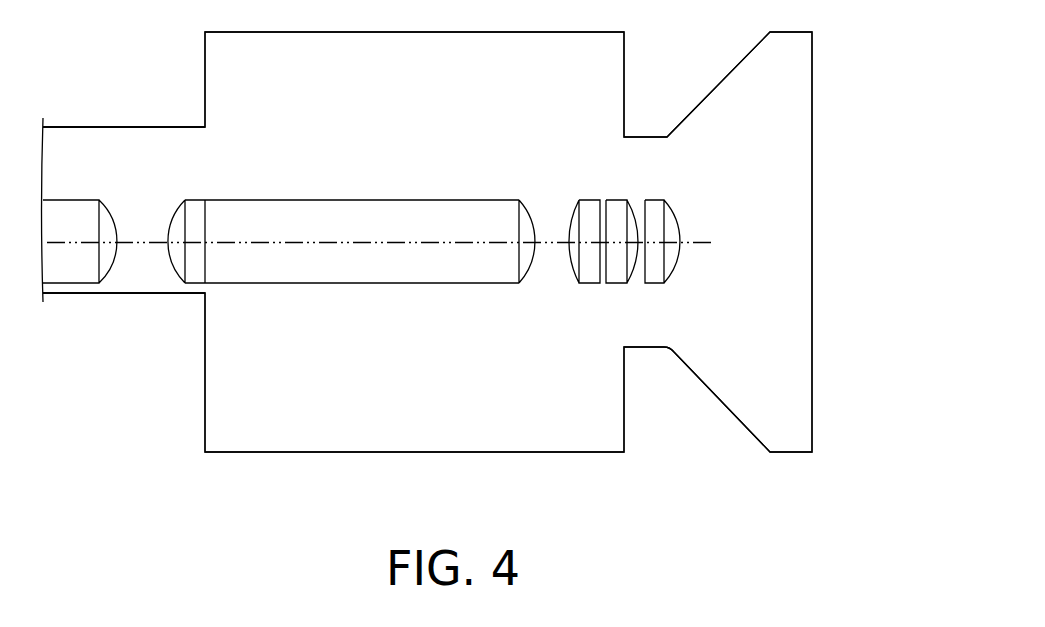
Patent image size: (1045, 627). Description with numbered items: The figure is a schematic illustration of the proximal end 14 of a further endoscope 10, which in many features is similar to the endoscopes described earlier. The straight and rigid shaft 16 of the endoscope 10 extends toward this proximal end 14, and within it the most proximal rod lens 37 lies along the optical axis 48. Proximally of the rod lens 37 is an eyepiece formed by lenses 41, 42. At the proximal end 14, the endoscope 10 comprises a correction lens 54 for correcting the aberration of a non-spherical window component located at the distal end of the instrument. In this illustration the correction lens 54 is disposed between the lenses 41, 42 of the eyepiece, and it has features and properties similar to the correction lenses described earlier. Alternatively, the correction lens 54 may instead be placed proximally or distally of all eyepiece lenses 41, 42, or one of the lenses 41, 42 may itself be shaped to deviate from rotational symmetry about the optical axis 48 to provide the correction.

The endoscope 10 is at (850, 93).
The proximal end 14 is at (493, 242).
The shaft 16 is at (123, 127).
The most proximal rod lens 37 is at (223, 279).
The lens of eyepiece 41 is at (592, 280).
The lens of eyepiece 42 is at (656, 280).
The optical axis 48 is at (700, 245).
The correction lens 54 is at (617, 202).